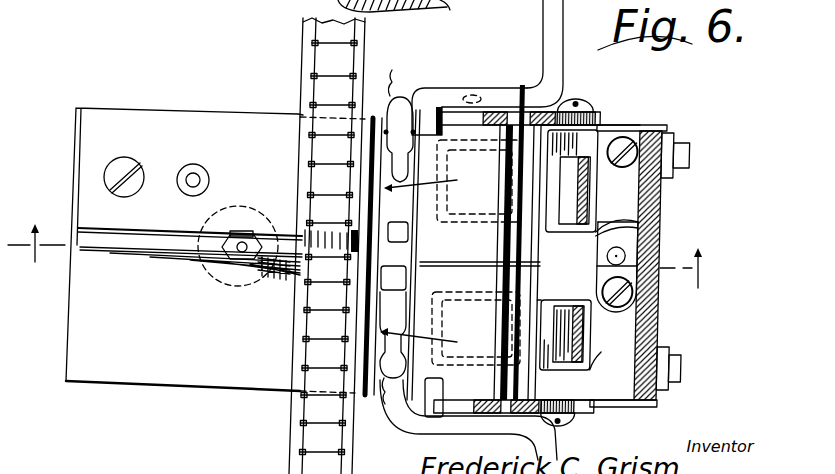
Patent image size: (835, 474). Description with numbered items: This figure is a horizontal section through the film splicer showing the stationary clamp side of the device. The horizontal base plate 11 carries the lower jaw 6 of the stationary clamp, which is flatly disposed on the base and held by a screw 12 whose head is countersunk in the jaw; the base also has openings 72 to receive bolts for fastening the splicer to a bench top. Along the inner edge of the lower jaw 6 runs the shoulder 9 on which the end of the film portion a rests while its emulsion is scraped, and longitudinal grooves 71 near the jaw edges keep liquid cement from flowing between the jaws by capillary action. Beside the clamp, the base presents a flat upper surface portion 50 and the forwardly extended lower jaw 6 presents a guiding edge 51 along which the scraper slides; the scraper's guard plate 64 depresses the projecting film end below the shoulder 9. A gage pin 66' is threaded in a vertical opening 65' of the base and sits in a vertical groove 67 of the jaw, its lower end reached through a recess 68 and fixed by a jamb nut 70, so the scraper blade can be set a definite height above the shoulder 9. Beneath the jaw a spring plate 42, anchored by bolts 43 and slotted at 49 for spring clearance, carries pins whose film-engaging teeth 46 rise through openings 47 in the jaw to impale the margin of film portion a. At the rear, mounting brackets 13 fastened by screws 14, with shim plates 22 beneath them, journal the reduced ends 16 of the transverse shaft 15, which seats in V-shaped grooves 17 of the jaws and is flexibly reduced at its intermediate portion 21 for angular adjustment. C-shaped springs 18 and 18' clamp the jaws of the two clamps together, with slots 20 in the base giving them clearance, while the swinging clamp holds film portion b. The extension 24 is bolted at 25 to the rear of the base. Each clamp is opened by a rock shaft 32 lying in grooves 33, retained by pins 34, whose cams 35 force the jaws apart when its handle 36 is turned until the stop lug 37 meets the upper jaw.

The lower jaw 6 is at (172, 127).
The shoulder 9 is at (369, 256).
The base plate 11 is at (67, 321).
The screw 12 is at (119, 158).
The mounting bracket 13 is at (598, 124).
The screw 14 is at (584, 101).
The transverse shaft 15 is at (520, 200).
The reduced end 16 is at (564, 92).
The V-shaped groove 17 is at (505, 248).
The C-shaped spring 18 is at (590, 181).
The C-shaped spring 18' is at (581, 335).
The slot 20 is at (574, 346).
The reduced intermediate portion 21 is at (507, 270).
The shim plate 22 is at (590, 405).
The extension 24 is at (667, 210).
The bolt 25 is at (690, 155).
The rock shaft 32 is at (372, 145).
The groove 33 is at (360, 183).
The pin 34 is at (407, 98).
The cam 35 is at (432, 261).
The handle 36 is at (492, 90).
The stop lug 37 is at (450, 127).
The spring plate 42 is at (583, 250).
The bolt 43 is at (628, 140).
The film-engaging tooth 46 is at (303, 135).
The opening 47 is at (302, 149).
The slot 49 is at (660, 222).
The flat upper surface portion 50 is at (420, 8).
The guiding edge 51 is at (112, 251).
The guard plate 64 is at (327, 272).
The vertical opening 65' is at (235, 119).
The gage pin 66' is at (214, 155).
The vertical groove 67 is at (248, 216).
The recess 68 is at (396, 1).
The jamb nut 70 is at (233, 281).
The longitudinal groove 71 is at (167, 229).
The opening 72 is at (199, 164).
The film portion a is at (302, 82).
The film portion b is at (290, 446).